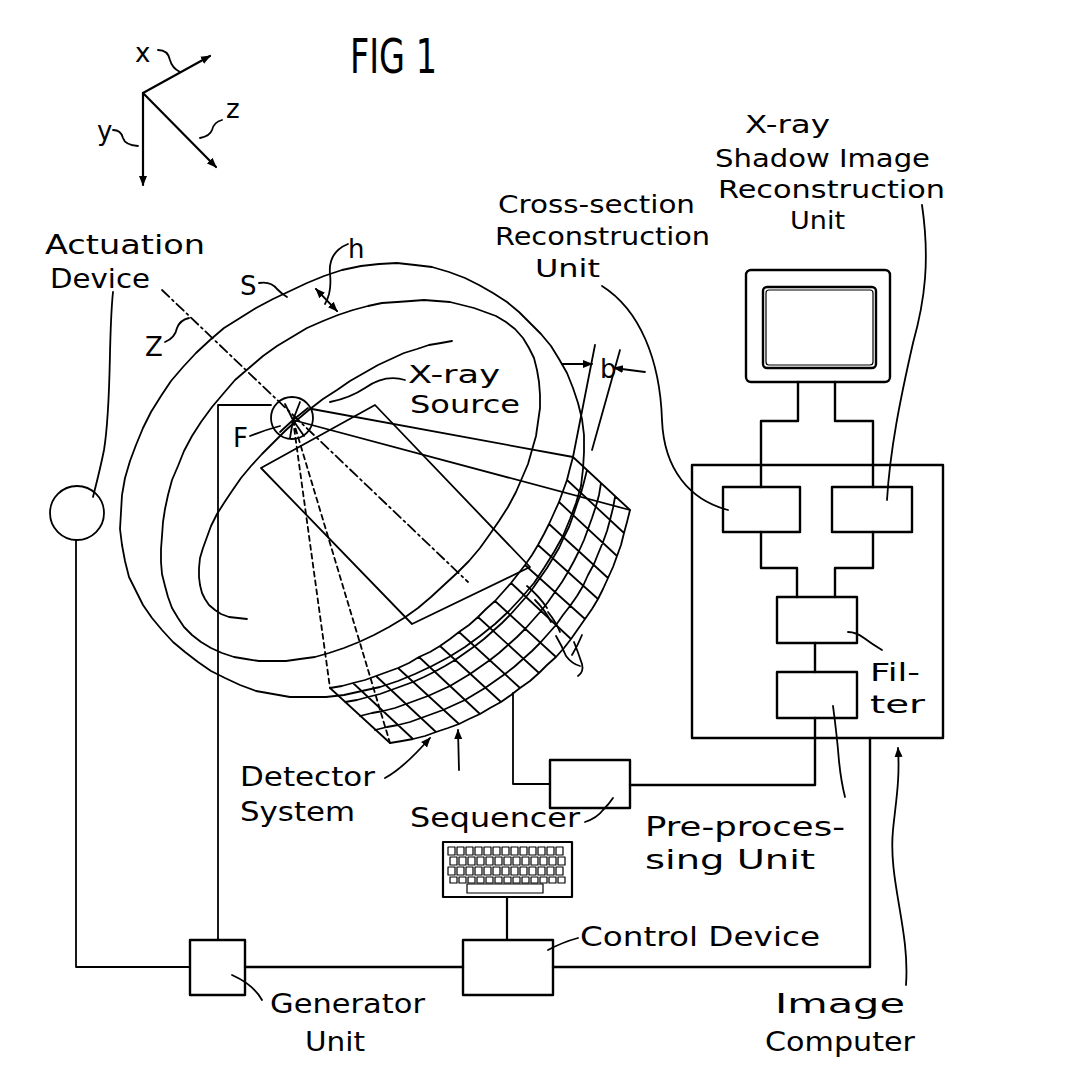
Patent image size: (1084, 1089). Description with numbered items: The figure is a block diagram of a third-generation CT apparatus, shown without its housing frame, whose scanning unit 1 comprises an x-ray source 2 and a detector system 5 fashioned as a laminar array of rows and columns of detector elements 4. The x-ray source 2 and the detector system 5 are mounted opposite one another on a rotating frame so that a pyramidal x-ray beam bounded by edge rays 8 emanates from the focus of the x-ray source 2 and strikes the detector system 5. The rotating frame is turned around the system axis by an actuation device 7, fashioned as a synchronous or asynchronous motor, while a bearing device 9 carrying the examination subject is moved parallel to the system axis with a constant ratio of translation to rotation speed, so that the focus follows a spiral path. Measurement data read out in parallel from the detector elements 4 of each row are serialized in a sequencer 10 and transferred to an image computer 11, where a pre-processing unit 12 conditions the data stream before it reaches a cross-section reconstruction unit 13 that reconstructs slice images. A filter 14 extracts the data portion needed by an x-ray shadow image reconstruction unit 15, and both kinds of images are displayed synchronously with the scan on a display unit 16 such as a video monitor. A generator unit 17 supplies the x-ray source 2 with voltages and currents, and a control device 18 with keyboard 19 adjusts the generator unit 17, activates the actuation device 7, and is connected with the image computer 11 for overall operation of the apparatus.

The scanning unit 1 is at (170, 714).
The x-ray source 2 is at (294, 400).
The detector elements 4 is at (555, 658).
The detector system 5 is at (473, 804).
The actuation device 7 is at (78, 497).
The edge rays 8 is at (326, 630).
The bearing device 9 is at (290, 490).
The sequencer 10 is at (599, 764).
The image computer 11 is at (718, 462).
The pre-processing unit 12 is at (776, 691).
The cross-section reconstruction unit 13 is at (733, 535).
The filter 14 is at (852, 620).
The x-ray shadow image reconstruction unit 15 is at (882, 504).
The display unit 16 is at (746, 282).
The generator unit 17 is at (215, 988).
The control device 18 is at (528, 990).
The keyboard 19 is at (444, 871).